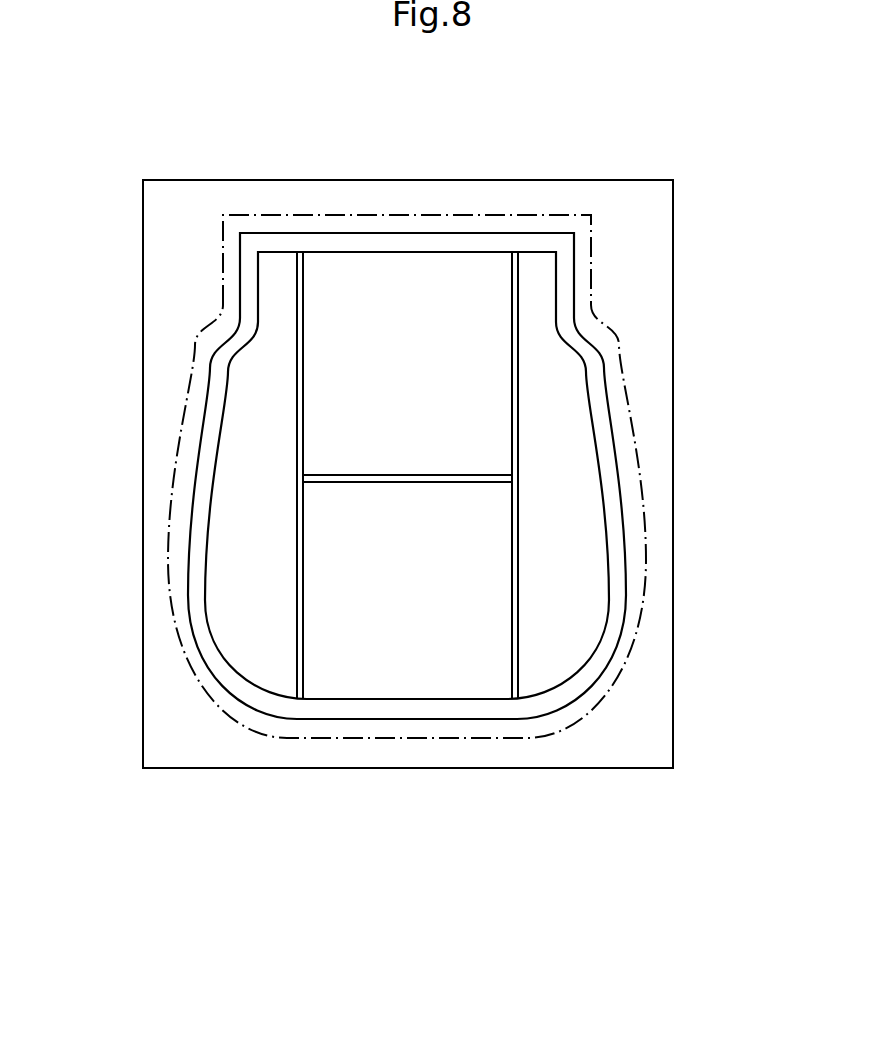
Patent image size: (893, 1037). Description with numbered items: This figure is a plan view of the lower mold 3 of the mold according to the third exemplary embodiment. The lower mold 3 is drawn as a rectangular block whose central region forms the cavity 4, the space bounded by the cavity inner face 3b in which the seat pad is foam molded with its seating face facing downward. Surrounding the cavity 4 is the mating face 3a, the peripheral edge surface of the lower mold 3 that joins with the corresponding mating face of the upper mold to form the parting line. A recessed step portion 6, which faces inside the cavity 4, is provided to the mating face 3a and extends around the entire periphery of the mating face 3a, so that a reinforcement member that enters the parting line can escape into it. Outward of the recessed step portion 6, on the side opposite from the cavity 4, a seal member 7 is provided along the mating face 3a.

The lower mold 3 is at (607, 180).
The mating face 3a is at (470, 198).
The cavity inner face 3b is at (452, 254).
The cavity 4 is at (395, 446).
The recessed step portion 6 is at (407, 243).
The seal member 7 is at (555, 215).